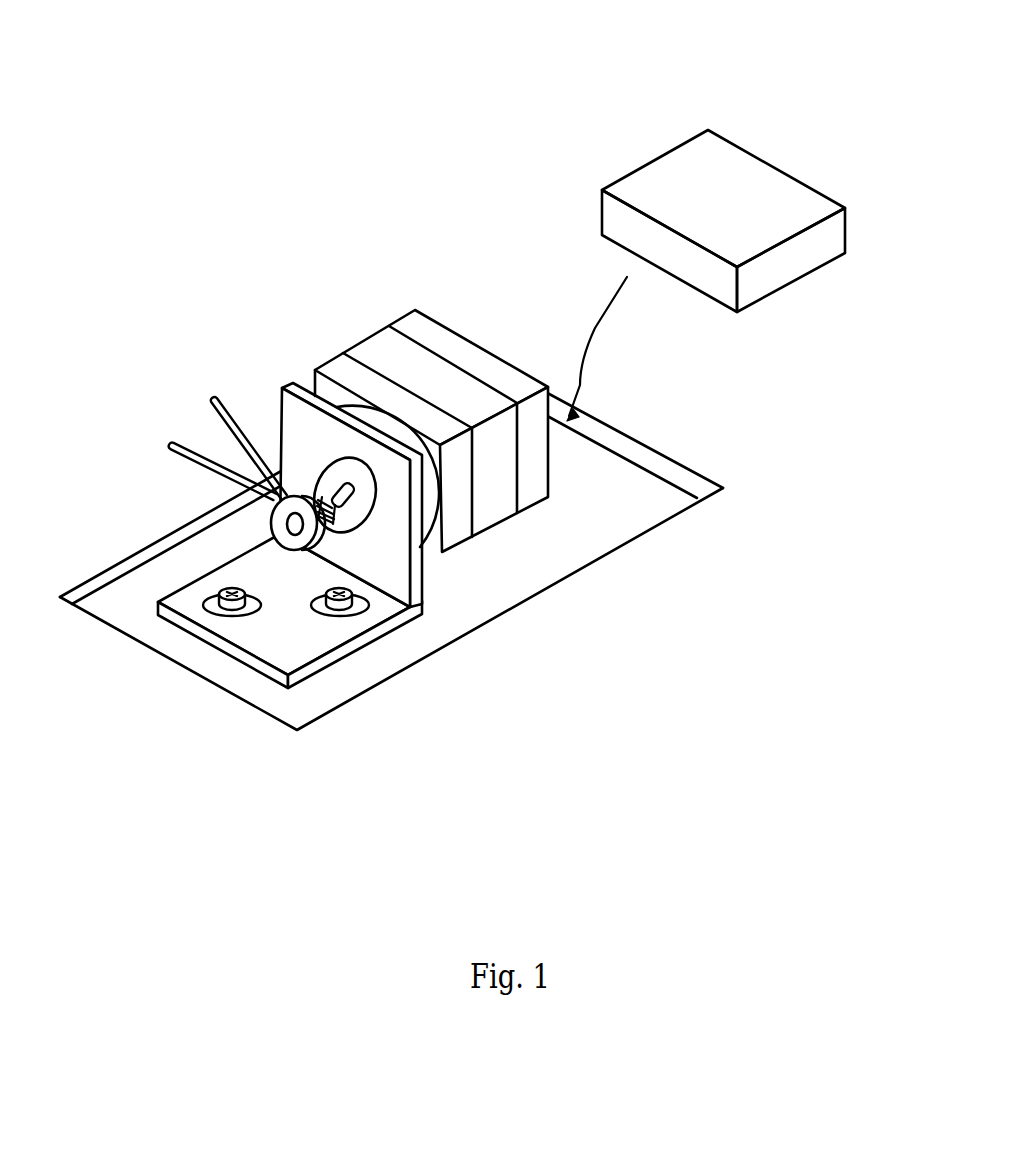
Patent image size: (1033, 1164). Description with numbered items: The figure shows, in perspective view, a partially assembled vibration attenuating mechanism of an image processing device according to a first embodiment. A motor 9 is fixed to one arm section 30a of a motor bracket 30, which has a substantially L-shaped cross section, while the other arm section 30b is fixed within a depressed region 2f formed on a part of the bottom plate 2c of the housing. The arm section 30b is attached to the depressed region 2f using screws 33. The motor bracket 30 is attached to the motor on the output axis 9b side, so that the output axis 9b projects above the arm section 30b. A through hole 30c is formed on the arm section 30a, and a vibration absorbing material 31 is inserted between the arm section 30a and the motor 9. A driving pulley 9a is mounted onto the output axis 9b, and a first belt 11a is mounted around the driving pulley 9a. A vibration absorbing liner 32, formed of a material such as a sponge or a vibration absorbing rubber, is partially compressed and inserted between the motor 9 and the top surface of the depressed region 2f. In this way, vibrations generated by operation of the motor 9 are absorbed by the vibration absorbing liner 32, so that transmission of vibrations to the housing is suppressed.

The bottom plate 2c is at (160, 708).
The depressed region 2f is at (637, 495).
The motor 9 is at (427, 333).
The driving pulley 9a is at (293, 540).
The output axis 9b is at (281, 426).
The first belt 11a is at (205, 468).
The motor bracket 30 is at (388, 619).
The arm section 30a is at (403, 563).
The arm section 30b is at (308, 652).
The through hole 30c is at (338, 467).
The vibration absorbing material 31 is at (368, 418).
The vibration absorbing liner 32 is at (687, 175).
The screws 33 is at (212, 607).